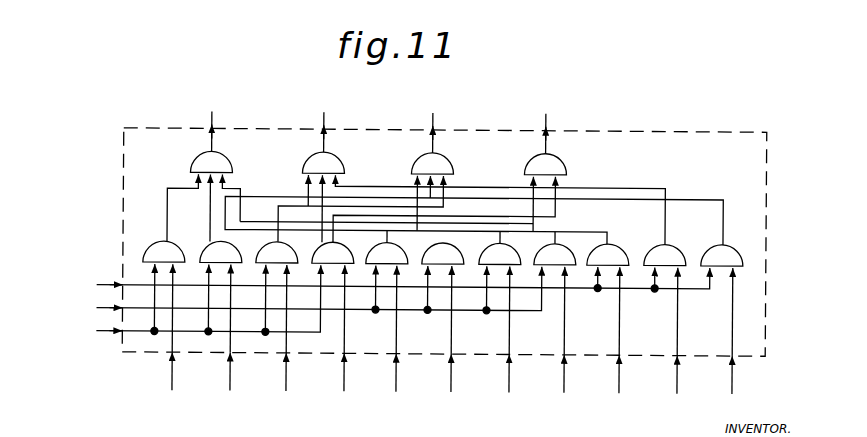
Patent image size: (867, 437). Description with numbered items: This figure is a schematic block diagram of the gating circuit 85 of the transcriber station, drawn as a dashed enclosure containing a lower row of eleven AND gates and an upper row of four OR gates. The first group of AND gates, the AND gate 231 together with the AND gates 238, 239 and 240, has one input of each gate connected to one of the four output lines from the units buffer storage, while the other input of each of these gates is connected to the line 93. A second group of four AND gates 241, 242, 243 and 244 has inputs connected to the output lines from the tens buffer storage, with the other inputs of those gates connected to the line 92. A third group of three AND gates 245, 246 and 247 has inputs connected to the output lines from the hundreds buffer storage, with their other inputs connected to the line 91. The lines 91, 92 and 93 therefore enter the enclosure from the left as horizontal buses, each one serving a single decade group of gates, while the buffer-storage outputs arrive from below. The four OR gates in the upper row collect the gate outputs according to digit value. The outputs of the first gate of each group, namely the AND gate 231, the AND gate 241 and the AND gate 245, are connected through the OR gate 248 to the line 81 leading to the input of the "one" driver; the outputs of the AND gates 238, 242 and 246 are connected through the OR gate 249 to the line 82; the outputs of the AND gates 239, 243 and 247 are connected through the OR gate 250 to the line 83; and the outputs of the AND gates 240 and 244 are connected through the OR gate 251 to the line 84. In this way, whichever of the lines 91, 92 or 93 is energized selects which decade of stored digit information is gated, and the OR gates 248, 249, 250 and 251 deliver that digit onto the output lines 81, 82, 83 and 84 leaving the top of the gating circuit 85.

The output line 81 is at (212, 118).
The line 82 is at (324, 118).
The line 83 is at (433, 120).
The line 84 is at (546, 120).
The gating circuit 85 is at (682, 129).
The line 91 is at (97, 287).
The line 92 is at (97, 310).
The line 93 is at (97, 333).
The AND gate 231 is at (151, 253).
The AND gate 238 is at (207, 255).
The AND gate 239 is at (278, 266).
The AND gate 240 is at (336, 266).
The AND gate 241 is at (390, 266).
The AND gate 242 is at (446, 266).
The AND gate 243 is at (500, 266).
The AND gate 244 is at (571, 246).
The AND gate 245 is at (616, 254).
The AND gate 246 is at (672, 254).
The AND gate 247 is at (741, 262).
The OR gate 248 is at (229, 165).
The OR gate 249 is at (341, 165).
The OR gate 250 is at (450, 163).
The OR gate 251 is at (563, 168).